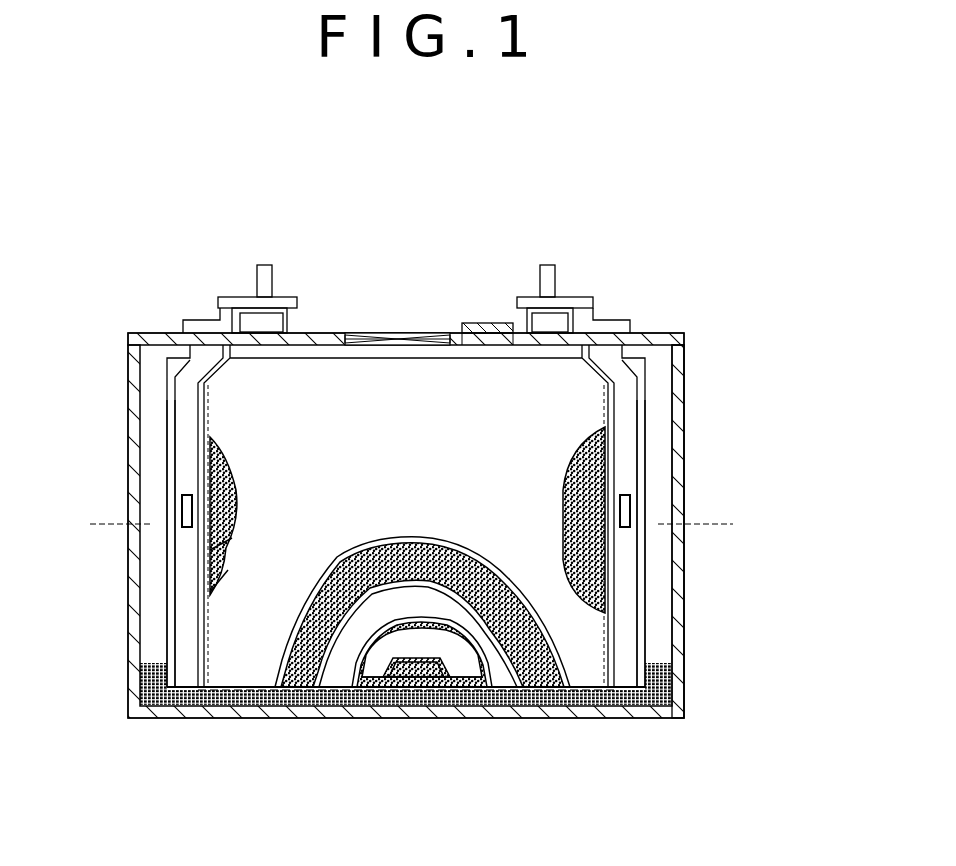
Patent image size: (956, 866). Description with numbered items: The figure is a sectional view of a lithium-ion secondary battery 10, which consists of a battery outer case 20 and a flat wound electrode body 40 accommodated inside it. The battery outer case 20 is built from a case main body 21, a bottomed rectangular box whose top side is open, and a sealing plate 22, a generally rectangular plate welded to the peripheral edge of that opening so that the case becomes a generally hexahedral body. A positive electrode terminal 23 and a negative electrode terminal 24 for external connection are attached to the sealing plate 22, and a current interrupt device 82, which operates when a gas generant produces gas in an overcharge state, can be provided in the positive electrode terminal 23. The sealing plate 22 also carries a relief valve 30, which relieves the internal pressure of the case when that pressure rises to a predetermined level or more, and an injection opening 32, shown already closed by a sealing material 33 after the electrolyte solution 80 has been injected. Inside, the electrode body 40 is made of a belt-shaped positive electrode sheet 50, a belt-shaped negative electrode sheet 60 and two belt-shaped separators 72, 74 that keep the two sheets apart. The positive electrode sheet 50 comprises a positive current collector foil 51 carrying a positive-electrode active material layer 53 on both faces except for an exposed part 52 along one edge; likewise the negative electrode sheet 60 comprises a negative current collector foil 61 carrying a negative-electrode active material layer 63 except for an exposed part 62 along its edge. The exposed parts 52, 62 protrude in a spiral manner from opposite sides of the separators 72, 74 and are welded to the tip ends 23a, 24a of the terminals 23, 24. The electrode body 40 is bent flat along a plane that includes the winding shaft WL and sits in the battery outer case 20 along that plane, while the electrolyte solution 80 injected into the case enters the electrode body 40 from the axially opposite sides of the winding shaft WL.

The lithium-ion secondary battery 10 is at (693, 296).
The battery outer case 20 is at (520, 725).
The case main body 21 is at (687, 677).
The sealing plate 22 is at (333, 333).
The positive electrode terminal 23 is at (250, 283).
The tip end of positive electrode terminal 23a is at (180, 505).
The negative electrode terminal 24 is at (563, 281).
The tip end of negative electrode terminal 24a is at (634, 503).
The relief valve 30 is at (406, 288).
The injection opening 32 is at (497, 295).
The sealing material 33 is at (480, 323).
The electrode body 40 is at (307, 383).
The positive electrode sheet 50 is at (377, 667).
The positive current collector foil 51 is at (163, 645).
The exposed part of positive current collector foil 52 is at (182, 663).
The positive-electrode active material layer 53 is at (230, 487).
The negative electrode sheet 60 is at (198, 580).
The negative current collector foil 61 is at (647, 578).
The exposed part of negative current collector foil 62 is at (633, 550).
The negative-electrode active material layer 63 is at (220, 568).
The separator 72 is at (238, 620).
The separator 74 is at (200, 550).
The electrolyte solution 80 is at (617, 697).
The current interrupt device 82 is at (195, 313).
The winding shaft WL is at (733, 524).